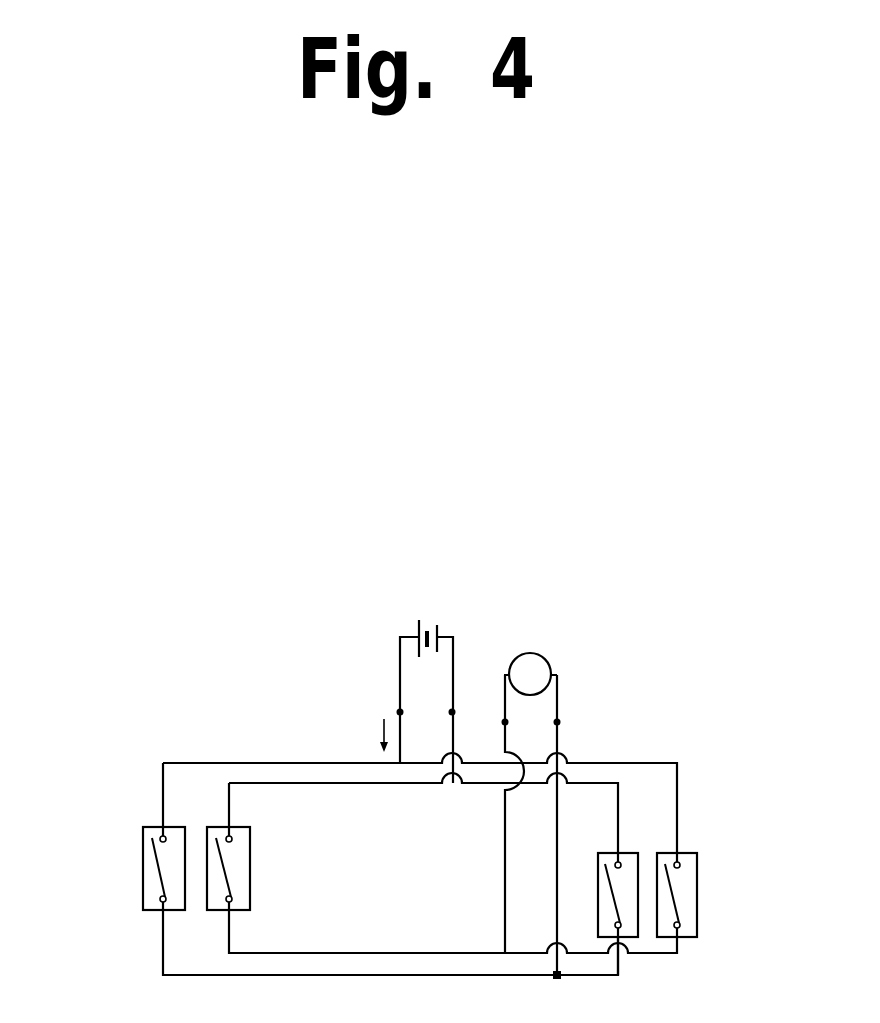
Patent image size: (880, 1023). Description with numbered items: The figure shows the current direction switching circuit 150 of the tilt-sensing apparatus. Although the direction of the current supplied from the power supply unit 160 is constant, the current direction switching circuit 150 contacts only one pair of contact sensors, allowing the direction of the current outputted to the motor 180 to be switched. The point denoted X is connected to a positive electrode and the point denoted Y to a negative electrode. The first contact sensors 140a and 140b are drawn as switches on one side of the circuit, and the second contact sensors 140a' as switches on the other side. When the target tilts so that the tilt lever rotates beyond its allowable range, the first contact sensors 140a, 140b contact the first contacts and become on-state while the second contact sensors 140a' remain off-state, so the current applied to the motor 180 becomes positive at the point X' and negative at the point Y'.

The current direction switching circuit 150 is at (90, 680).
The power supply unit 160 is at (423, 616).
The motor 180 is at (542, 654).
The first contact sensor 140a is at (157, 851).
The first contact sensor 140b is at (147, 870).
The second contact sensor 140a' is at (712, 877).